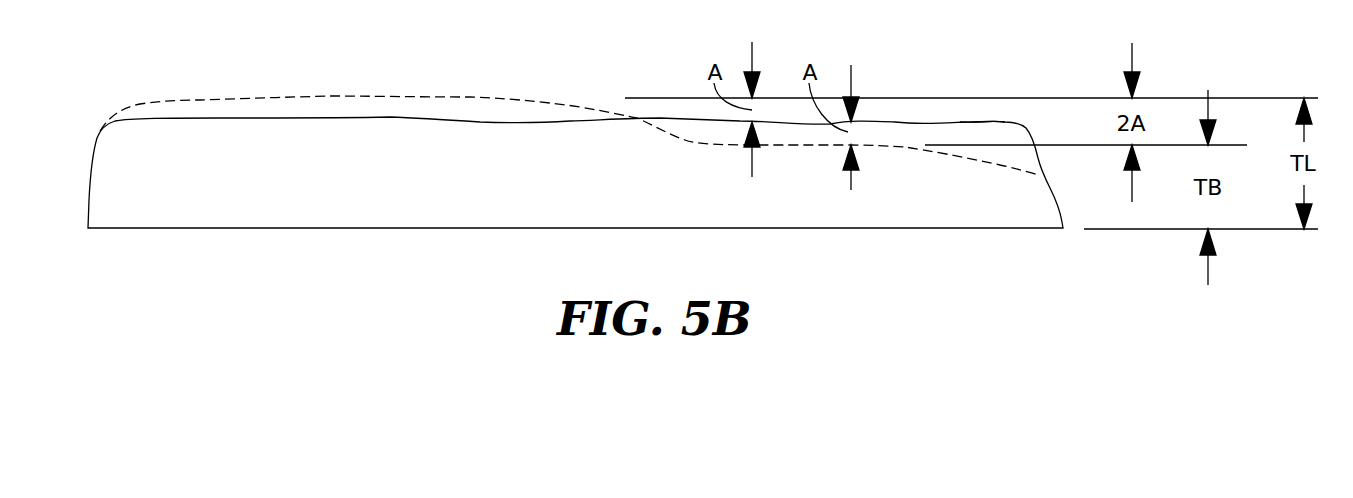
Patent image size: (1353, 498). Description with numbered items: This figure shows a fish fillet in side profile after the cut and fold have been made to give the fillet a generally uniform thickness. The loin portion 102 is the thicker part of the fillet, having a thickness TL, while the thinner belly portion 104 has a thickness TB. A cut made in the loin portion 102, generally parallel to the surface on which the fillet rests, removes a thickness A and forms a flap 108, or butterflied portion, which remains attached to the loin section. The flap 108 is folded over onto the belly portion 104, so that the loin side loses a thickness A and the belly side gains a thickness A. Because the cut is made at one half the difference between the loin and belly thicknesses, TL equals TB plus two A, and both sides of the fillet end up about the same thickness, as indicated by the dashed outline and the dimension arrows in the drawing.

The loin portion 102 is at (189, 192).
The belly portion 104 is at (933, 208).
The flap 108 is at (989, 130).